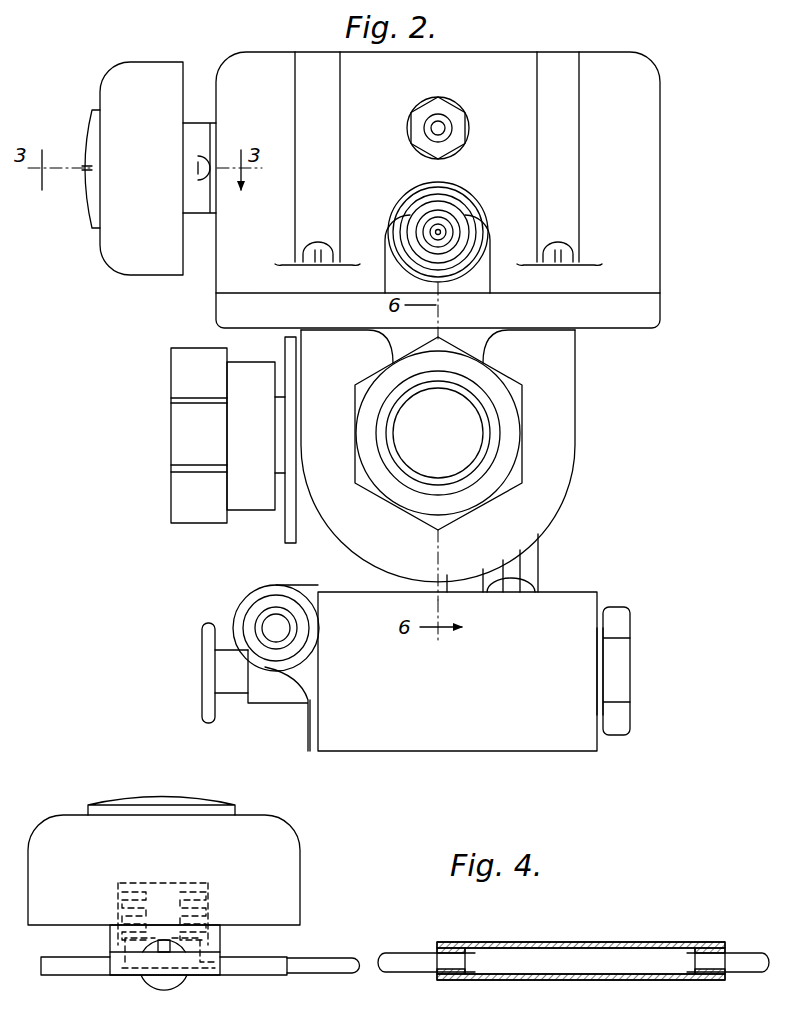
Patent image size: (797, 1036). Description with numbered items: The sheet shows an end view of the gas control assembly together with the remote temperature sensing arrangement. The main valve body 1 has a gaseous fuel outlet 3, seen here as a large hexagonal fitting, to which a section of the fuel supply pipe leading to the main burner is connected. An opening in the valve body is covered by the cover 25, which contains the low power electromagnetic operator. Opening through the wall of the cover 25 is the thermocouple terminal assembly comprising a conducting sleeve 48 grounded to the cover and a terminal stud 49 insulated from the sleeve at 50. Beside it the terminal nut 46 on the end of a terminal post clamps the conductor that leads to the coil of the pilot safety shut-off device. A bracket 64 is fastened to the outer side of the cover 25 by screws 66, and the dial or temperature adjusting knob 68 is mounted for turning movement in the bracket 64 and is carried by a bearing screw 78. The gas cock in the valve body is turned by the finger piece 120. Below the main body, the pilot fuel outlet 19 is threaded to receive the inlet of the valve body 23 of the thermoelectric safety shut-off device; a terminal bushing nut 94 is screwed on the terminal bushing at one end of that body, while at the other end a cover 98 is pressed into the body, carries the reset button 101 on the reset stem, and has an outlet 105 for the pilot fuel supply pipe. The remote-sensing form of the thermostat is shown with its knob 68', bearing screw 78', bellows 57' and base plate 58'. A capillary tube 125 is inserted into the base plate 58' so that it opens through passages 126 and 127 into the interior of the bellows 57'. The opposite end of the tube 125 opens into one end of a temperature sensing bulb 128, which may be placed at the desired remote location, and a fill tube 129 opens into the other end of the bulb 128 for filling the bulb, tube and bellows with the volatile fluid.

In FIG. 2, the main valve body 1 is at (553, 488).
In FIG. 2, the gaseous fuel outlet 3 is at (500, 425).
In FIG. 2, the pilot fuel outlet 19 is at (525, 588).
In FIG. 2, the valve body of thermoelectric safety shut-off device 23 is at (508, 735).
In FIG. 2, the cover 25 is at (640, 148).
In FIG. 2, the terminal nut 46 is at (450, 122).
In FIG. 2, the conducting sleeve 48 is at (476, 216).
In FIG. 2, the terminal stud 49 is at (430, 230).
In FIG. 2, the insulation 50 is at (443, 202).
In FIG. 2, the bracket 64 is at (200, 128).
In FIG. 2, the screws 66 is at (198, 178).
In FIG. 2, the temperature adjusting knob 68 is at (119, 171).
In FIG. 2, the bearing screw 78 is at (61, 153).
In FIG. 2, the terminal bushing nut 94 is at (618, 660).
In FIG. 2, the cover 98 is at (313, 734).
In FIG. 2, the reset button 101 is at (205, 660).
In FIG. 2, the outlet 105 is at (252, 603).
In FIG. 2, the finger piece 120 is at (178, 417).
In FIG. 2, the bellows 57' is at (131, 908).
In FIG. 2, the base plate 58' is at (181, 970).
In FIG. 2, the knob 68' is at (190, 870).
In FIG. 2, the bearing screw 78' is at (158, 784).
In FIG. 4, the capillary tube 125 is at (392, 962).
In FIG. 2, the passage 126 is at (180, 975).
In FIG. 2, the passage 127 is at (150, 957).
In FIG. 4, the temperature sensing bulb 128 is at (517, 965).
In FIG. 4, the fill tube 129 is at (745, 955).